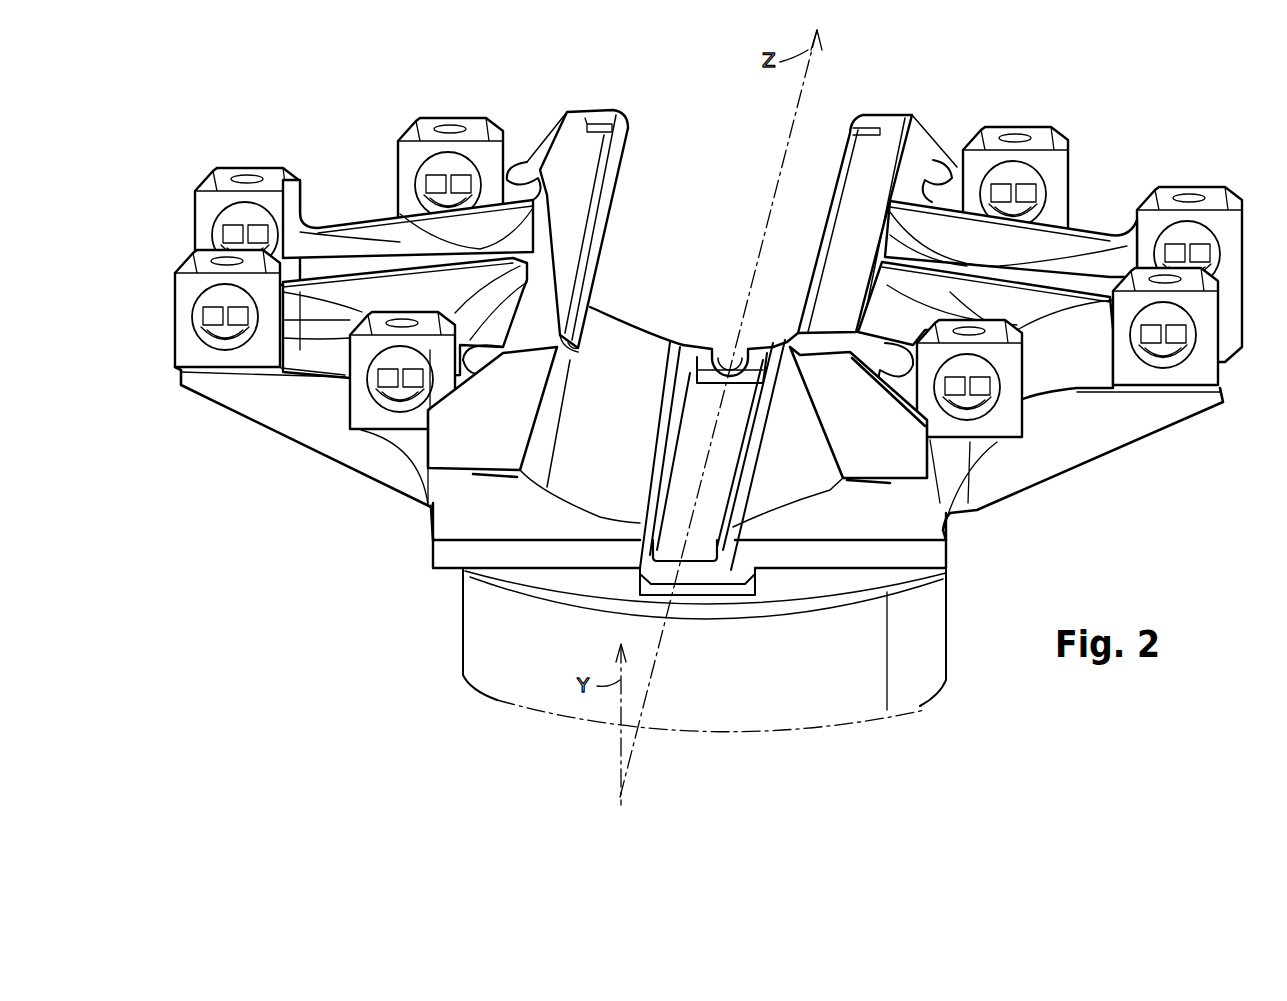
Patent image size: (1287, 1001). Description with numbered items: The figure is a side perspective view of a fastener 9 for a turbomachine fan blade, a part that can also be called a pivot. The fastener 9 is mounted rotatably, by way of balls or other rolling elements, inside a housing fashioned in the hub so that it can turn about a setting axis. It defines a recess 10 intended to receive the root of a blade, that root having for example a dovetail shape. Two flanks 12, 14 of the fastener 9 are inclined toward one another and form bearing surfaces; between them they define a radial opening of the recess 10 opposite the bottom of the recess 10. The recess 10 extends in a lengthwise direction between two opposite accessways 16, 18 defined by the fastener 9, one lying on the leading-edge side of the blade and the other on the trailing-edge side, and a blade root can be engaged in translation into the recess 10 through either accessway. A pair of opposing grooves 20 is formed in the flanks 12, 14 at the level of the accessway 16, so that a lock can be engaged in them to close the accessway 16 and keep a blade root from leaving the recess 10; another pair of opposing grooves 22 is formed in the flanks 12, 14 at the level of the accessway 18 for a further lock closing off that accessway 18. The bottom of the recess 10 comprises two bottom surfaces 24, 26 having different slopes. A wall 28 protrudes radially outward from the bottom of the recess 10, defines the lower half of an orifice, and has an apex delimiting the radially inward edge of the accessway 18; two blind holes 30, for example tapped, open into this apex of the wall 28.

The fastener 9 is at (355, 243).
The recess 10 is at (740, 217).
The flank 12 is at (567, 189).
The flank 14 is at (897, 143).
The accessway 16 is at (786, 494).
The accessway 18 is at (685, 180).
The grooves 20 is at (578, 343).
The grooves 22 is at (607, 145).
The bottom surface 24 is at (740, 422).
The bottom surface 26 is at (650, 462).
The wall 28 is at (730, 335).
The blind holes 30 is at (700, 345).